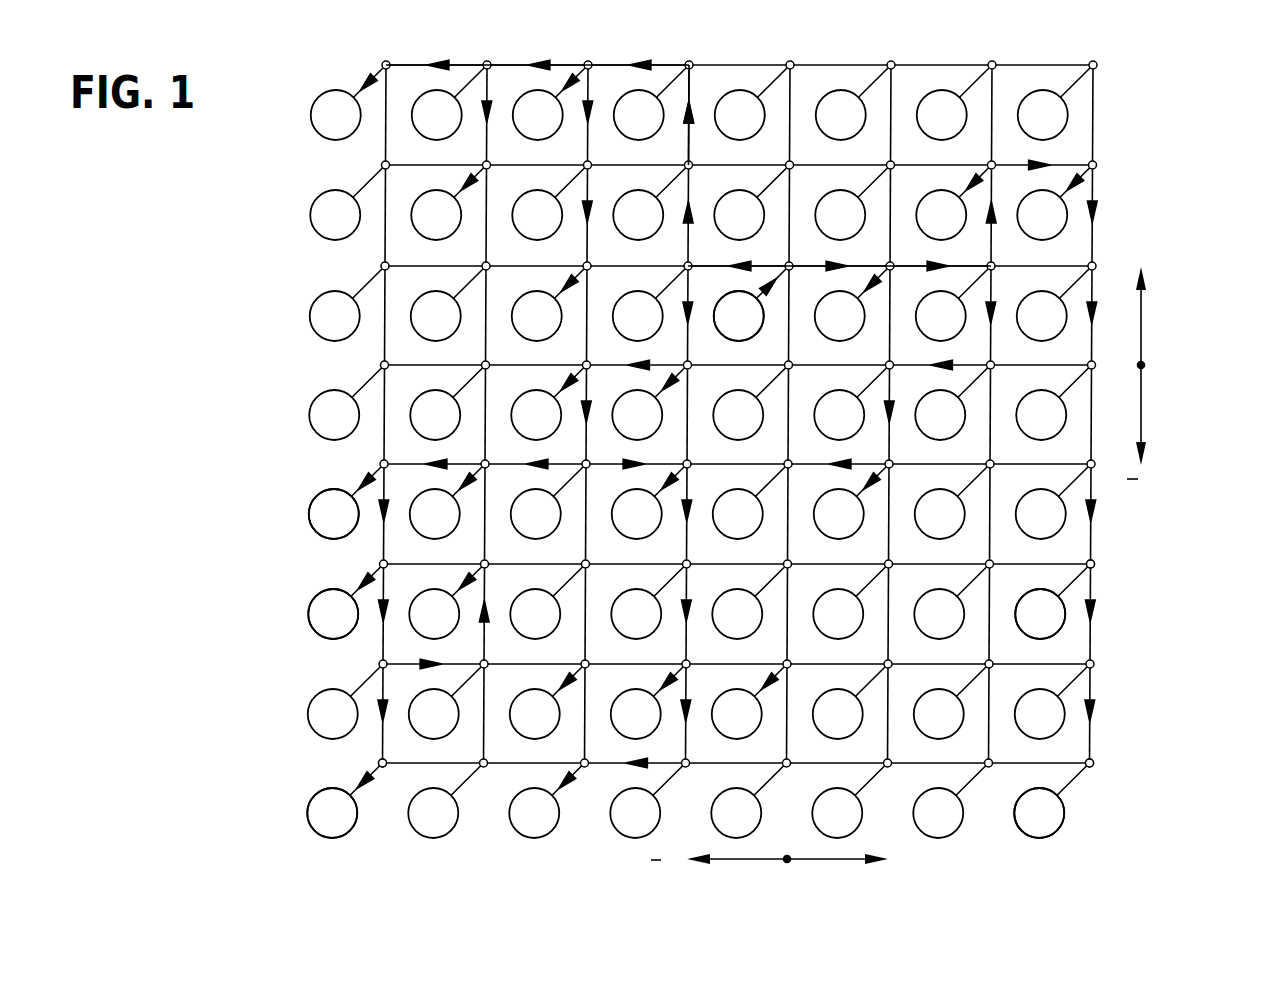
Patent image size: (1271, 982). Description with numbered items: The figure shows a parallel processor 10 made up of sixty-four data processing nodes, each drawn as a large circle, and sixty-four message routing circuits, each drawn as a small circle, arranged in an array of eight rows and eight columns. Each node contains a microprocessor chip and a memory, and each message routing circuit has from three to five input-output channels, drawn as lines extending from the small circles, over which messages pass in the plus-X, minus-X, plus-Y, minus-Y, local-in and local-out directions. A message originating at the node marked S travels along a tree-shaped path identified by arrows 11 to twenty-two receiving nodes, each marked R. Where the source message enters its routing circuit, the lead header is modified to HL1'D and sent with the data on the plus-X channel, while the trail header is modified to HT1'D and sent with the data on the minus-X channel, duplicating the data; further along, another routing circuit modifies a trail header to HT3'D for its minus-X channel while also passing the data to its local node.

The parallel processor 10 is at (244, 349).
The arrows 11 is at (356, 486).
The source node indicator S is at (745, 309).
The receiving node indicator R is at (687, 465).
The modified trail header and data HT3'D is at (463, 41).
The modified trail header and data HT1'D is at (835, 146).
The modified lead header and data HL1'D is at (950, 146).